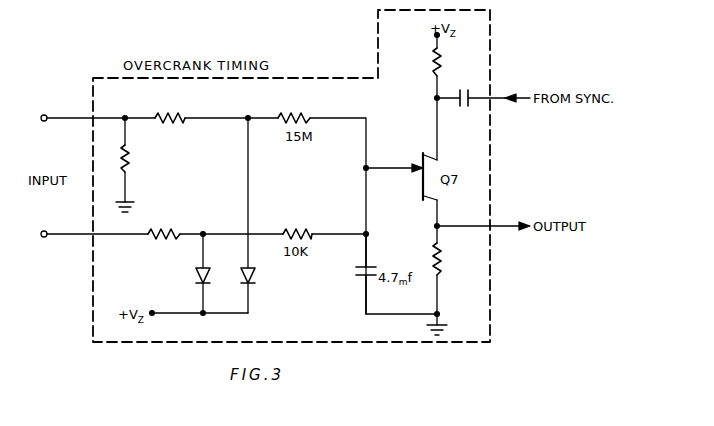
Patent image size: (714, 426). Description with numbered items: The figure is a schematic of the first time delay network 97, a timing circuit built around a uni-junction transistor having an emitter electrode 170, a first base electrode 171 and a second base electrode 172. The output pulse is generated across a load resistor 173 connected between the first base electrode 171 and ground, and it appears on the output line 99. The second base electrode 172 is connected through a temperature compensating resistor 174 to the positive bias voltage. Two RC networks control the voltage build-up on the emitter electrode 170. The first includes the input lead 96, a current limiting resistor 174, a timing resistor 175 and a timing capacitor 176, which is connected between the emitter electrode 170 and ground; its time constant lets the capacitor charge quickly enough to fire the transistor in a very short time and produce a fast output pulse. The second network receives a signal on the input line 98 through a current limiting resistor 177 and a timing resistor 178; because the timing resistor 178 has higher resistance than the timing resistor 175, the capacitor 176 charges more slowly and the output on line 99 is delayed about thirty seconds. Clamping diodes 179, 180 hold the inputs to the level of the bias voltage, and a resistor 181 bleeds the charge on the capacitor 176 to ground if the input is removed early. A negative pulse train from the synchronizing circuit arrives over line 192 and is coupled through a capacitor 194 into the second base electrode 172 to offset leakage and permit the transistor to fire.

The input lead 96 is at (73, 236).
The time delay network 97 is at (361, 93).
The input line 98 is at (67, 116).
The output line 99 is at (505, 228).
The emitter electrode 170 is at (412, 174).
The first base electrode 171 is at (433, 199).
The second base electrode 172 is at (434, 156).
The load resistor 173 is at (440, 257).
The temperature compensating resistor 174 is at (162, 239).
The timing resistor 175 is at (295, 229).
The timing capacitor 176 is at (355, 280).
The current limiting resistor 177 is at (168, 113).
The timing resistor 178 is at (294, 113).
The clamping diode 179 is at (196, 276).
The clamping diode 180 is at (255, 279).
The bleed resistor 181 is at (129, 165).
The line 192 is at (503, 97).
The coupling capacitor 194 is at (465, 107).